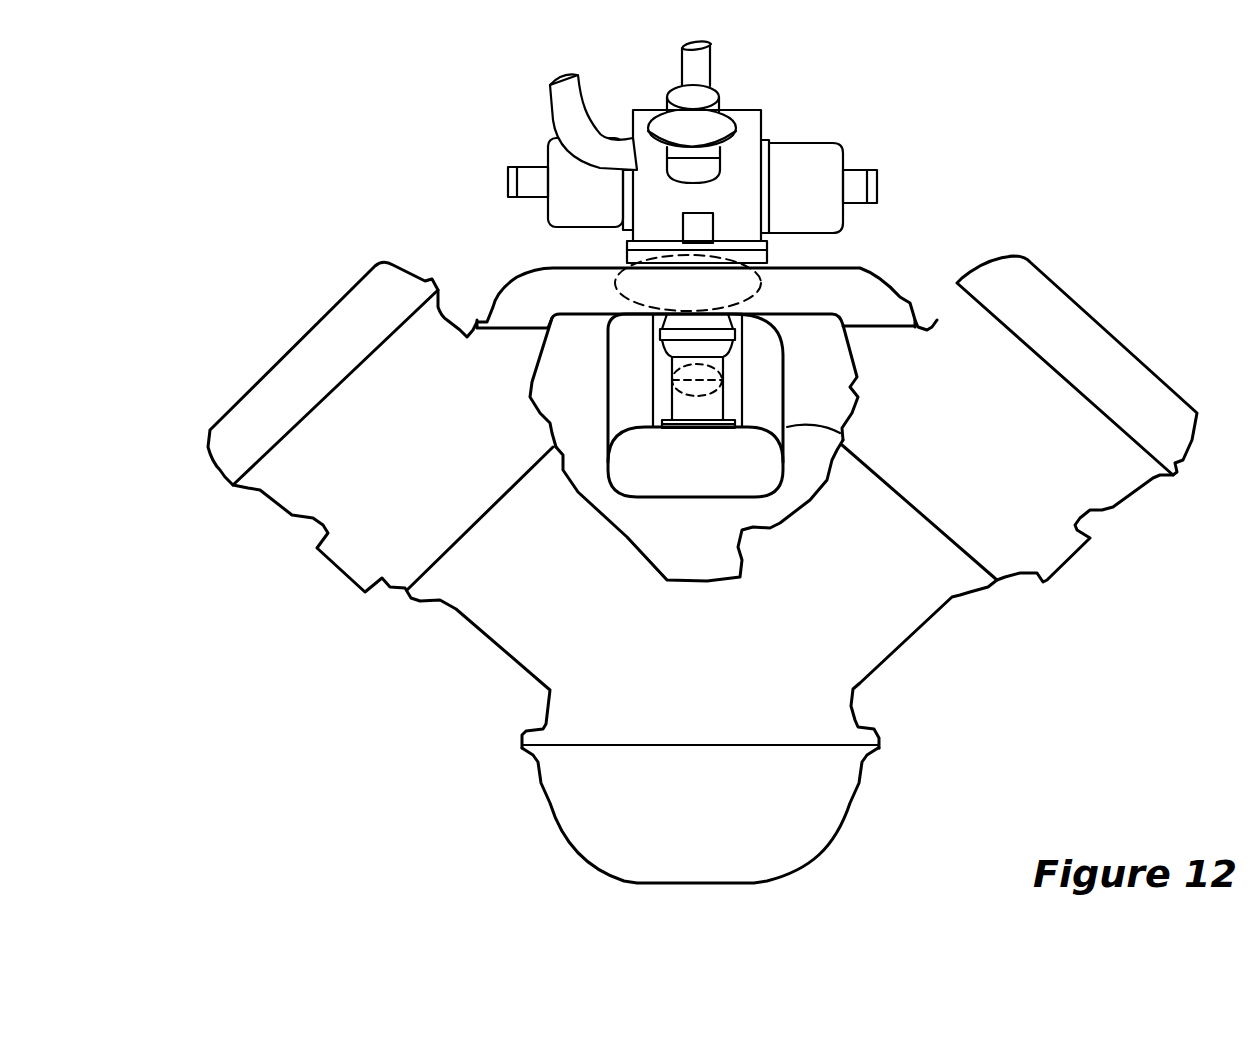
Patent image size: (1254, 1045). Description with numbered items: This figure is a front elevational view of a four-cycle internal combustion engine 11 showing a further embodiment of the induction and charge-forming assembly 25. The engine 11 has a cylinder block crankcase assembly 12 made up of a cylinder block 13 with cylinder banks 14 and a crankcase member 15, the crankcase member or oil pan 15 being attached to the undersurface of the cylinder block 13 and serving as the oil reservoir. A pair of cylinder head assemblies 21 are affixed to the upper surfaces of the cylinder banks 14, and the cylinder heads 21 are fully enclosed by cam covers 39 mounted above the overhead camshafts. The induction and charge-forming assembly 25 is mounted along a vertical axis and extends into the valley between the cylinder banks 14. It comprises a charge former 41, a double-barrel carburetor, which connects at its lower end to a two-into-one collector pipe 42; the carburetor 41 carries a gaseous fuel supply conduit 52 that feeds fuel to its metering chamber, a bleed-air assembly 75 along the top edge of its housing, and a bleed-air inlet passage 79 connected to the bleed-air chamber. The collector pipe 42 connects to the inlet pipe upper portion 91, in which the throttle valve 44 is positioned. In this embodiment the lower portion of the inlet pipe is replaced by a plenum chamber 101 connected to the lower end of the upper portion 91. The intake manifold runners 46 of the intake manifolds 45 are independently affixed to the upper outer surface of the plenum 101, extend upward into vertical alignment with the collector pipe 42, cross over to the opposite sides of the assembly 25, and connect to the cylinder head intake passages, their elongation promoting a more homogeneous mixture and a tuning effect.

The internal combustion engine 11 is at (932, 167).
The cylinder block crankcase assembly 12 is at (868, 695).
The cylinder block 13 is at (707, 578).
The cylinder banks 14 is at (477, 632).
The crankcase member 15 is at (850, 795).
The cylinder head assemblies 21 is at (537, 380).
The induction and charge-forming assembly 25 is at (676, 139).
The cam covers 39 is at (320, 312).
The charge former 41 is at (806, 129).
The collector pipe 42 is at (760, 267).
The throttle valve 44 is at (734, 377).
The intake manifolds 45 is at (605, 438).
The intake manifold runners 46 is at (487, 313).
The gaseous fuel supply conduit 52 is at (712, 46).
The bleed-air assembly 75 is at (706, 103).
The bleed-air inlet passage 79 is at (560, 135).
The inlet pipe upper portion 91 is at (660, 365).
The plenum chamber 101 is at (652, 498).